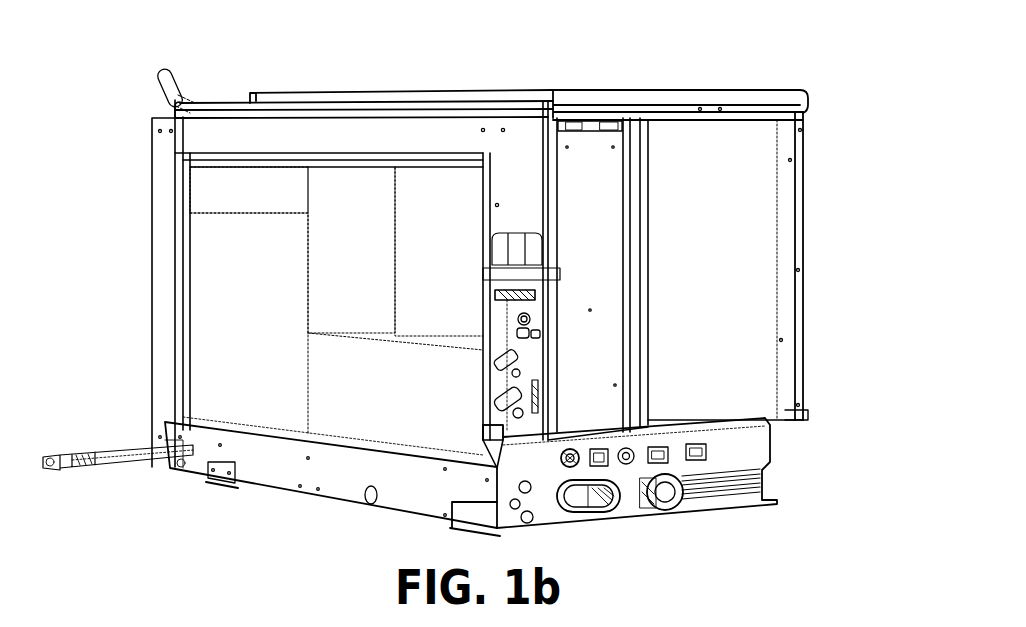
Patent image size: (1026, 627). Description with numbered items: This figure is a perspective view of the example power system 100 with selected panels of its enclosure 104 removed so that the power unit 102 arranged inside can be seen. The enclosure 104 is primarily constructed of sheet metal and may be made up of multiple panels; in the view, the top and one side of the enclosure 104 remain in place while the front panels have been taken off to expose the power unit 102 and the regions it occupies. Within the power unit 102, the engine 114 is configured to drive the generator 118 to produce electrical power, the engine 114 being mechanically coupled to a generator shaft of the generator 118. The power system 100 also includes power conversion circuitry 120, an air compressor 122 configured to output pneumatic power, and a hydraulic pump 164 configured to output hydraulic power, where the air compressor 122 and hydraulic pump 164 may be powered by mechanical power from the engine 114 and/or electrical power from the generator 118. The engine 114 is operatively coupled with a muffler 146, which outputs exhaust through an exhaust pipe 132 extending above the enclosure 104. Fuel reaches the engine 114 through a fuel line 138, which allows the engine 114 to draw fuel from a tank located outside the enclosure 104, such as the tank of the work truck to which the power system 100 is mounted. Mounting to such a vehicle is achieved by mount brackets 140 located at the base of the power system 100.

The power system 100 is at (113, 33).
The power unit 102 is at (146, 166).
The enclosure 104 is at (752, 89).
The engine 114 is at (249, 323).
The generator 118 is at (395, 370).
The power conversion circuitry 120 is at (728, 270).
The air compressor 122 is at (439, 251).
The exhaust pipe 132 is at (181, 80).
The fuel line 138 is at (107, 452).
The mount bracket 140 is at (226, 485).
The muffler 146 is at (249, 190).
The hydraulic pump 164 is at (351, 250).